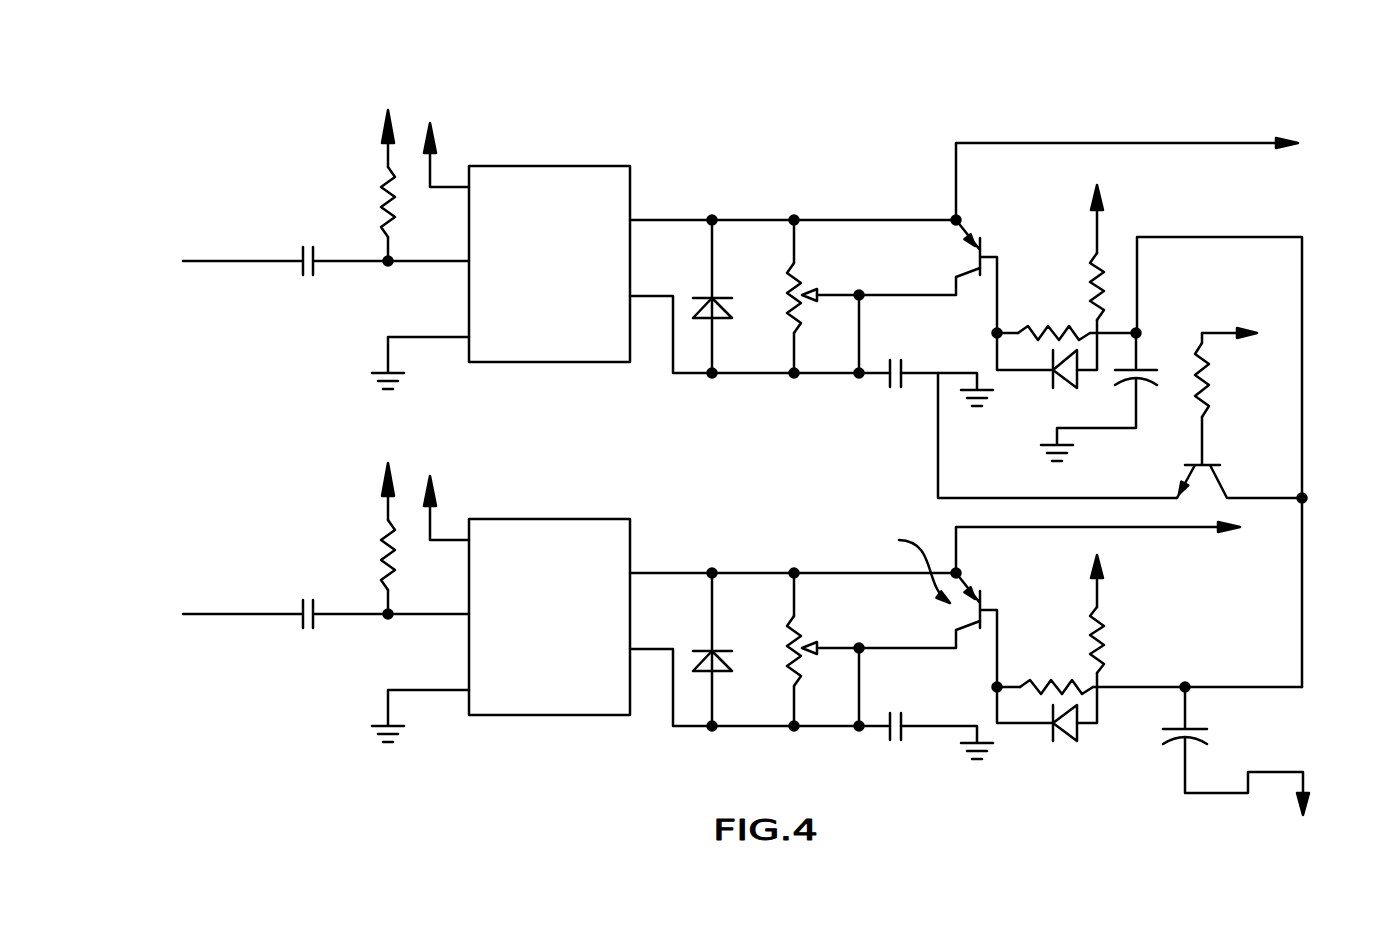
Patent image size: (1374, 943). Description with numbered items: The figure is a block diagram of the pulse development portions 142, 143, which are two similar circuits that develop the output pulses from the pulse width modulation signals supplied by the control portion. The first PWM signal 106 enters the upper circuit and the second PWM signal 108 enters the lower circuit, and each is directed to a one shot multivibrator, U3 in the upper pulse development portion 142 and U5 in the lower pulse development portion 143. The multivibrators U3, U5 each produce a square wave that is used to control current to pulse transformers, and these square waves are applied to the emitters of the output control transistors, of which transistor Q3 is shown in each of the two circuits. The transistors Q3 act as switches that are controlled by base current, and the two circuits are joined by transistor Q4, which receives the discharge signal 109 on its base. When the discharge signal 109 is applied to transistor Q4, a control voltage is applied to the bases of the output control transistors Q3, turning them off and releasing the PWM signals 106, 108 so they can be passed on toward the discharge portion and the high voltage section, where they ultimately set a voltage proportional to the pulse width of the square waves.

The pulse development portion 142 is at (656, 95).
The pulse development portion 143 is at (598, 730).
The pulse width modulation signal 106 is at (185, 261).
The pulse width modulation signal 108 is at (185, 614).
The discharge signal 109 is at (1225, 333).
The one shot multivibrator U3 is at (537, 178).
The one shot multivibrator U5 is at (537, 531).
The transistor Q3 is at (945, 246).
The transistor Q4 is at (1222, 474).